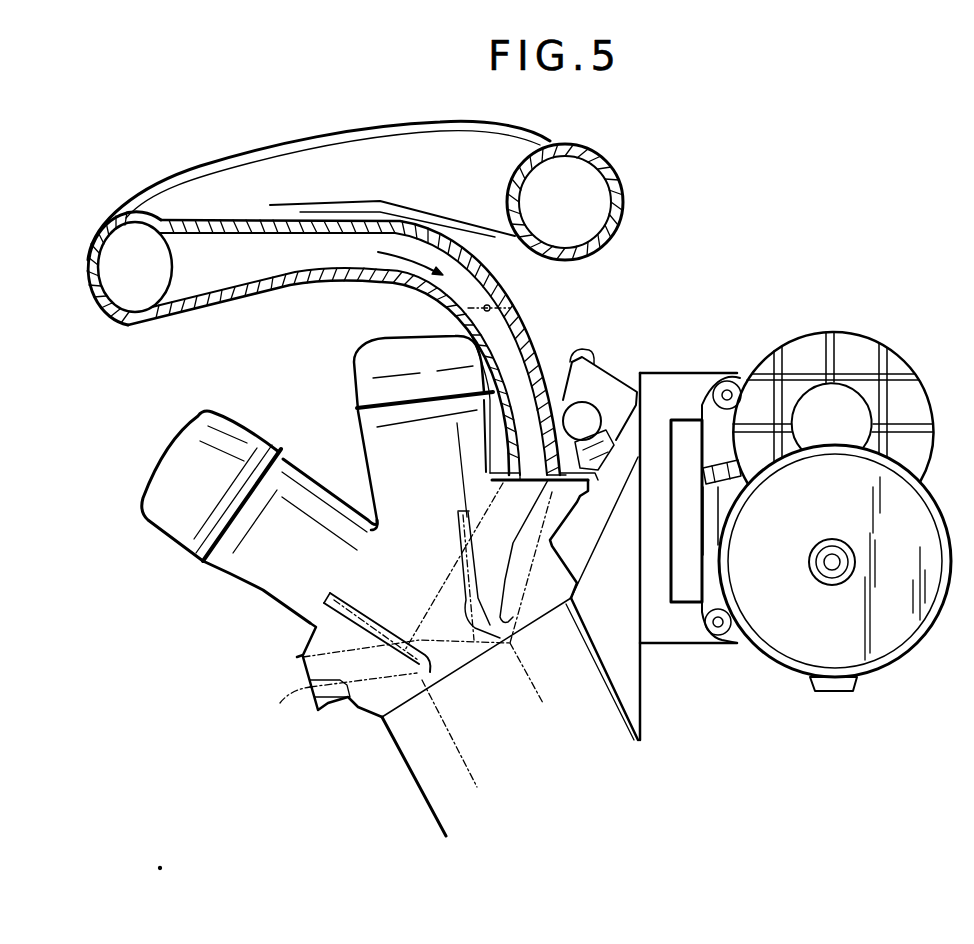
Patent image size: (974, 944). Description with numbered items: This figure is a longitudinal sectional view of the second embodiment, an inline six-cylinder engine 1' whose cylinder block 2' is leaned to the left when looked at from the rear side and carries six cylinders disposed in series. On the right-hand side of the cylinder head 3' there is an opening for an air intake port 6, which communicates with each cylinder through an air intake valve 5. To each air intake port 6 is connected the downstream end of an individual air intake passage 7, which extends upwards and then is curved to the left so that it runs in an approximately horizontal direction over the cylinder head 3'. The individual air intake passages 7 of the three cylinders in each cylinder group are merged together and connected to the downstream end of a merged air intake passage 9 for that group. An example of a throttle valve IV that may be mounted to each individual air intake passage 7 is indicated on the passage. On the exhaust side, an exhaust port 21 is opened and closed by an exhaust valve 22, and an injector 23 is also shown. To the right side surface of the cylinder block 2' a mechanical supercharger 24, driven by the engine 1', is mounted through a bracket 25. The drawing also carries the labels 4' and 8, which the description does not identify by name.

The engine 1' is at (237, 510).
The cylinder block 2' is at (458, 717).
The cylinder head 3' is at (311, 665).
The intake pipe 4' is at (317, 427).
The air intake valve 5 is at (452, 541).
The air intake port 6 is at (514, 617).
The individual air intake passage 7 is at (514, 328).
The intake duct 8 is at (296, 280).
The merged air intake passage 9 is at (102, 258).
The throttle valve IV is at (505, 300).
The exhaust port 21 is at (338, 706).
The exhaust valve 22 is at (351, 594).
The injector 23 is at (622, 363).
The mechanical supercharger 24 is at (792, 678).
The bracket 25 is at (679, 644).